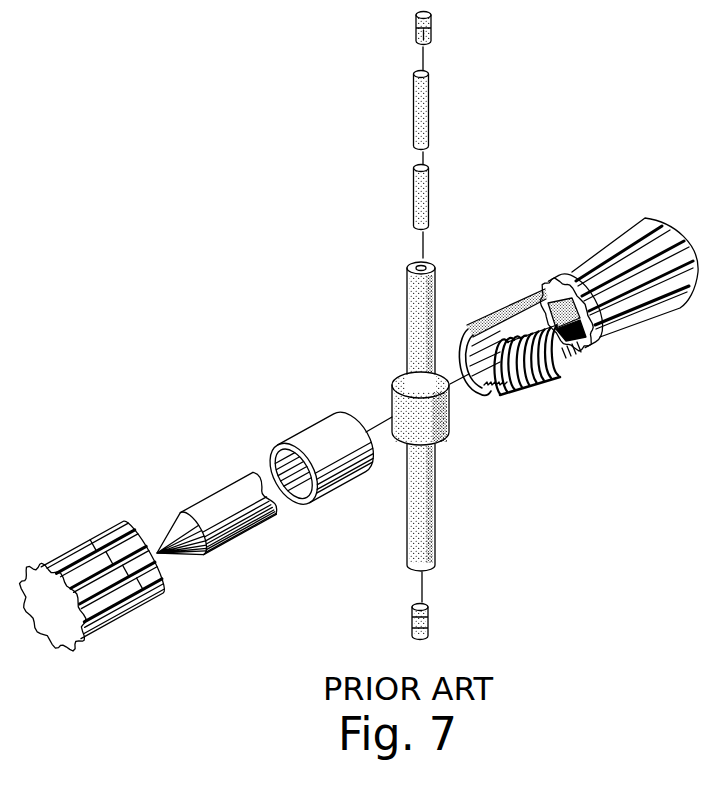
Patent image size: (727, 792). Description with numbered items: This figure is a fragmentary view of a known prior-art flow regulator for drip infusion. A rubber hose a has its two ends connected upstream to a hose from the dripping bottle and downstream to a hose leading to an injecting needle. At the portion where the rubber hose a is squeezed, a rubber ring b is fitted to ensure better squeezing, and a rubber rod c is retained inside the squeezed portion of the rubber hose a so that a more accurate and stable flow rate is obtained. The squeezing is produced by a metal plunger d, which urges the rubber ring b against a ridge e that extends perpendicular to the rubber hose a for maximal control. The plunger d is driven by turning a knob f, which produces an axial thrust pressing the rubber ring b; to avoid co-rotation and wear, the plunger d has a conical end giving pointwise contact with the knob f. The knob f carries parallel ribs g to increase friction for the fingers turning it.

The rubber hose a is at (434, 545).
The rubber ring b is at (404, 388).
The rubber rod c is at (415, 117).
The metal plunger d is at (222, 497).
The ridge e is at (553, 276).
The knob f is at (63, 628).
The parallel ribs g is at (74, 552).